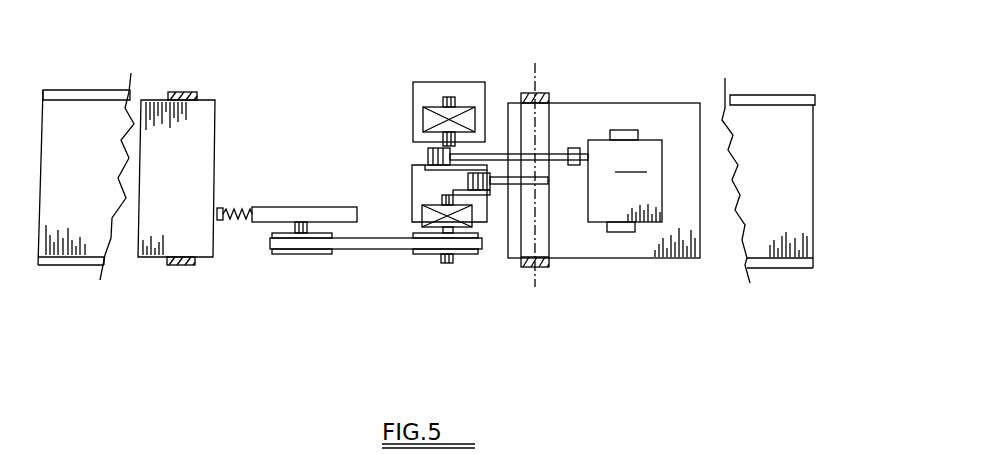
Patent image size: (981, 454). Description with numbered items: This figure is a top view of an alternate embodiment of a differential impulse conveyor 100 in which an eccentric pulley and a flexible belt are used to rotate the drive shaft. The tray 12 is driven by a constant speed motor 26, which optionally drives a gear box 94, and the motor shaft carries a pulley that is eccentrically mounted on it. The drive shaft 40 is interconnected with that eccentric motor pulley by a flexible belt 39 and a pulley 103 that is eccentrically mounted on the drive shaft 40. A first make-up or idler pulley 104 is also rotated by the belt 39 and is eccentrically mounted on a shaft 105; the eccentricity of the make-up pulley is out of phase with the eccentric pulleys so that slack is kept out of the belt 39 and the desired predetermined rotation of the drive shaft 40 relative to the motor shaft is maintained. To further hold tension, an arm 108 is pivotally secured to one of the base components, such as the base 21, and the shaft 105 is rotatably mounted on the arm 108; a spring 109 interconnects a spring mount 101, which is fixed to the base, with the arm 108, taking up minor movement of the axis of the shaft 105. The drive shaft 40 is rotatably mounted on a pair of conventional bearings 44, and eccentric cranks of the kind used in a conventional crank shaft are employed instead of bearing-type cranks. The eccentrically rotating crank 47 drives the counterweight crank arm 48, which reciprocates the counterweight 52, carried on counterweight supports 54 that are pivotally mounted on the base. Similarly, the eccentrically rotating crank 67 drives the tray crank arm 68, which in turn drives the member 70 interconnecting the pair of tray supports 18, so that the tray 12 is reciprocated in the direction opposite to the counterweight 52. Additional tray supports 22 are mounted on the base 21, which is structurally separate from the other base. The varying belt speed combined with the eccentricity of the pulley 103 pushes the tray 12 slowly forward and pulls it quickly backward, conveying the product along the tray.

The tray 12 is at (78, 122).
The tray supports 18 is at (549, 94).
The base 21 is at (216, 100).
The tray supports 22 is at (197, 92).
The constant speed motor 26 is at (424, 96).
The flexible belt 39 is at (388, 247).
The drive shaft 40 is at (452, 96).
The bearings 44 is at (433, 112).
The crank 47 is at (428, 140).
The counterweight crank arm 48 is at (496, 153).
The counterweight 52 is at (625, 176).
The counterweight supports 54 is at (622, 233).
The crank 67 is at (420, 184).
The tray crank arm 68 is at (492, 186).
The member 70 is at (542, 232).
The gear box 94 is at (412, 178).
The differential impulse conveyor 100 is at (421, 61).
The spring mount 101 is at (228, 222).
The pulley 103 is at (473, 254).
The make-up pulley 104 is at (283, 243).
The shaft 105 is at (276, 207).
The arm 108 is at (300, 212).
The spring 109 is at (218, 203).